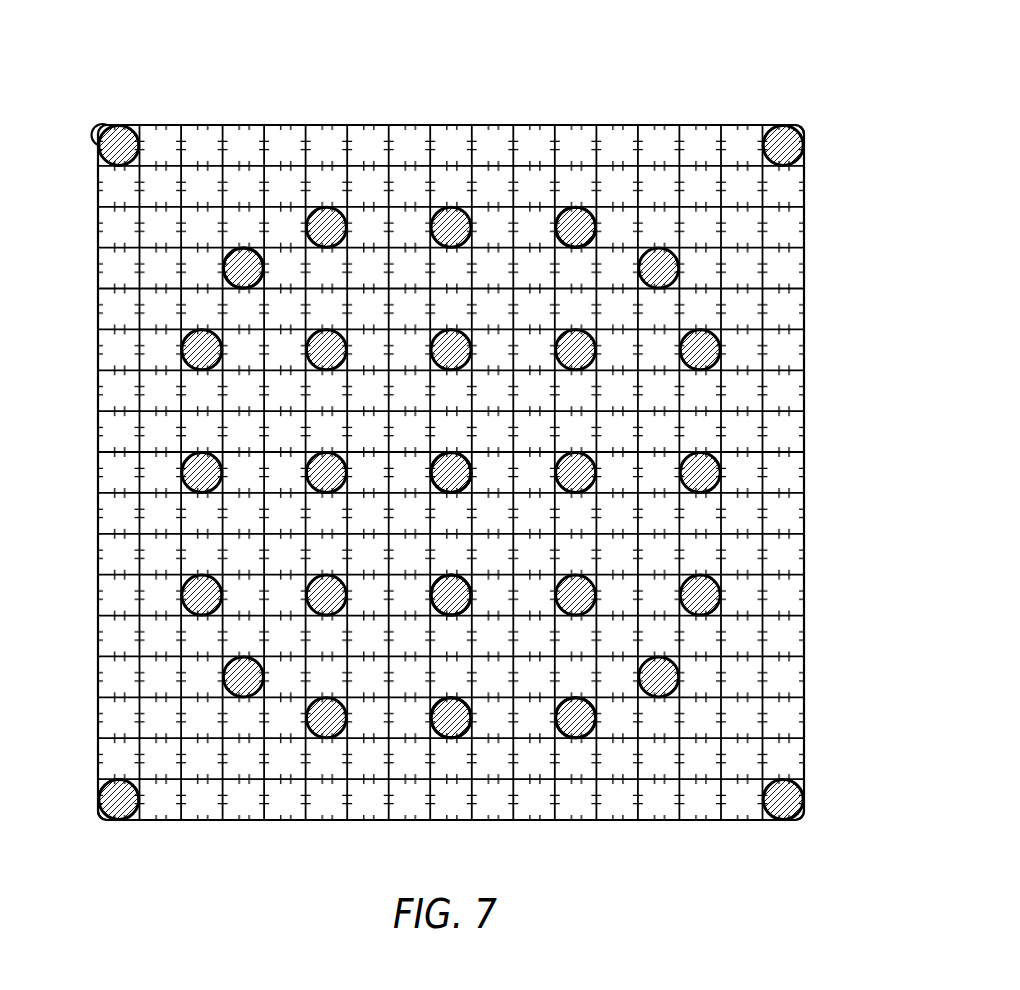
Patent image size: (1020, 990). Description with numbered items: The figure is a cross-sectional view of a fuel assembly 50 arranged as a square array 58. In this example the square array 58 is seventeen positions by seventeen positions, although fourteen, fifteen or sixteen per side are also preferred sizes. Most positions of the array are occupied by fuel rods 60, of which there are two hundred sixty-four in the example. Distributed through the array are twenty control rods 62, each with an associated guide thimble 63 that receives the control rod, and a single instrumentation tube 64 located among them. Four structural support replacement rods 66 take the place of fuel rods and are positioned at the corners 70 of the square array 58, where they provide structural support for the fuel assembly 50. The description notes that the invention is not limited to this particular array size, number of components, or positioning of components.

The fuel assembly 50 is at (585, 869).
The square array 58 is at (667, 78).
The fuel rods 60 is at (787, 437).
The control rods 62 is at (243, 262).
The guide thimbles 63 is at (226, 250).
The instrumentation tube 64 is at (464, 456).
The structural support replacement rods 66 is at (102, 132).
The corners 70 is at (119, 121).